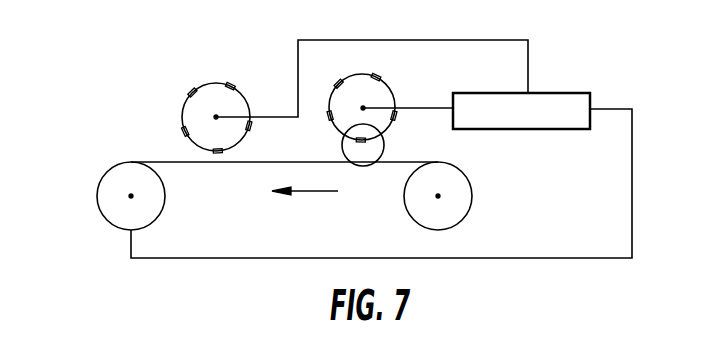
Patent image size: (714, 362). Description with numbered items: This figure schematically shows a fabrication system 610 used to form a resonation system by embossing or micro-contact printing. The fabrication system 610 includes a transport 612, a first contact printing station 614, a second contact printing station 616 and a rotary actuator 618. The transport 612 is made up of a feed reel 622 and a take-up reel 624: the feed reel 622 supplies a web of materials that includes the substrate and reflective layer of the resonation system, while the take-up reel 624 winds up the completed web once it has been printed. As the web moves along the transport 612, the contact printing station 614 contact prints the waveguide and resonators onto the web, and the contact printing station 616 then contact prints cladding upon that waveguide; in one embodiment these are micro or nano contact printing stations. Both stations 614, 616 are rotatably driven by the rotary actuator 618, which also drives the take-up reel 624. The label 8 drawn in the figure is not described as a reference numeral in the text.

The fabrication system 610 is at (101, 78).
The transport 612 is at (478, 160).
The contact printing station 614 is at (382, 95).
The contact printing station 616 is at (218, 82).
The rotary actuator 618 is at (563, 92).
The feed reel 622 is at (470, 200).
The take-up reel 624 is at (97, 183).
The substrate 8 is at (356, 123).